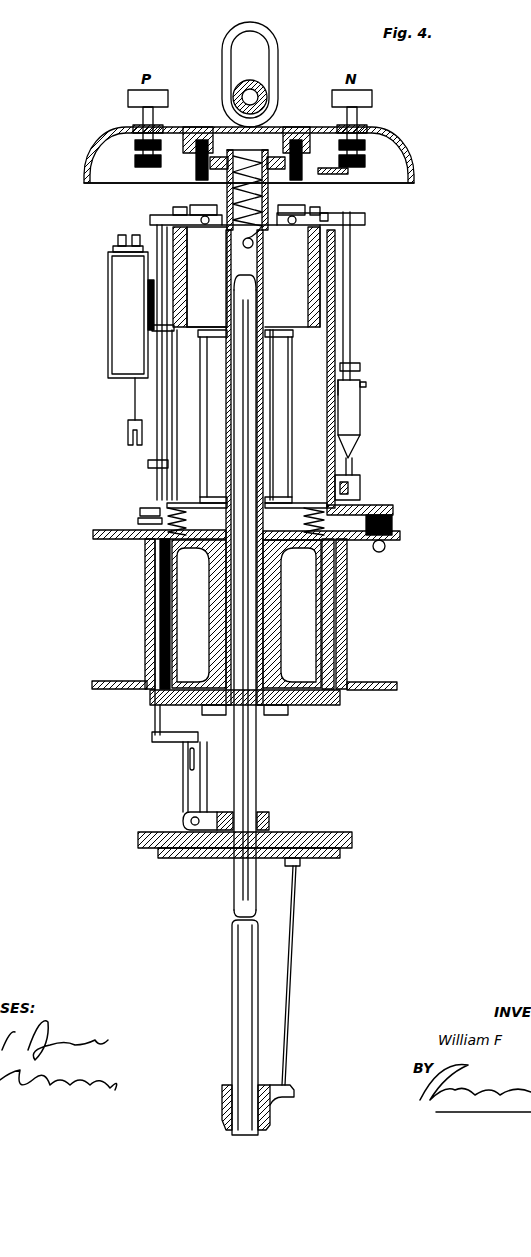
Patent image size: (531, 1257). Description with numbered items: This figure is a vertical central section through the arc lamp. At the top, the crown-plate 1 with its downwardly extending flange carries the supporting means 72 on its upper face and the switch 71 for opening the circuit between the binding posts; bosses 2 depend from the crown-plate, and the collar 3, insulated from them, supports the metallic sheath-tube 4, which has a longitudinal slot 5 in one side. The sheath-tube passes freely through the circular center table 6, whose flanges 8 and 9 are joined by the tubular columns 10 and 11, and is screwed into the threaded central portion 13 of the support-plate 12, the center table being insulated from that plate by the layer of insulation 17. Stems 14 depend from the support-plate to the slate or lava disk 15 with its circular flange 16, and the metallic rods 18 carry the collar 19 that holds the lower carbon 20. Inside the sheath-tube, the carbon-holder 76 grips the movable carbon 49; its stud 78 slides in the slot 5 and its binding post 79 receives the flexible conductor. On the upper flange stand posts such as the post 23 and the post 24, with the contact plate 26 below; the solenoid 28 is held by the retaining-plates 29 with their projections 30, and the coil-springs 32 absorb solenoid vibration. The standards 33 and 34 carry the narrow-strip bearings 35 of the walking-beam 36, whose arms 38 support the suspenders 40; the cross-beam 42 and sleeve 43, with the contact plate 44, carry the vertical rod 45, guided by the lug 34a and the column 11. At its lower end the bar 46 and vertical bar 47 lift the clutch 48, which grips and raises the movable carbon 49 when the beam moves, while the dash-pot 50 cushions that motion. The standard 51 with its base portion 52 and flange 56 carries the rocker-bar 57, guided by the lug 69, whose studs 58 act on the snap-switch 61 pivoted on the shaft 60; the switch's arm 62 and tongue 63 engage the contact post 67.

The crown-plate 1 is at (395, 148).
The bosses 2 is at (196, 142).
The collar 3 is at (230, 185).
The sheath-tube 4 is at (207, 415).
The longitudinal slot 5 is at (332, 350).
The center table 6 is at (280, 628).
The flange 8 is at (120, 540).
The flange 9 is at (103, 681).
The tubular column 10 is at (348, 630).
The tubular column 11 is at (145, 606).
The support-plate 12 is at (300, 705).
The enlarged central portion 13 is at (285, 714).
The stems 14 is at (183, 778).
The disk 15 is at (333, 832).
The circular flange 16 is at (170, 858).
The layer of insulation 17 is at (190, 688).
The metallic rods 18 is at (290, 965).
The collar 19 is at (266, 1112).
The lower carbon 20 is at (235, 1022).
The post 23 is at (172, 450).
The post 24 is at (336, 440).
The contact plate 26 is at (150, 522).
The solenoid 28 is at (296, 417).
The retaining-plates 29 is at (300, 330).
The transversely extending projections 30 is at (170, 326).
The coil-springs 32 is at (186, 521).
The standard 33 is at (308, 284).
The standard 34 is at (187, 288).
The horizontally projecting lug 34a is at (148, 303).
The narrow-strip bearings 35 is at (160, 215).
The walking-beam 36 is at (300, 200).
The arms 38 is at (165, 224).
The suspenders 40 is at (160, 228).
The cross-beam 42 is at (150, 462).
The sleeve 43 is at (158, 482).
The contact plate 44 is at (150, 510).
The vertical rod 45 is at (157, 400).
The bar 46 is at (175, 742).
The vertical bar 47 is at (200, 790).
The clutch 48 is at (220, 812).
The movable carbon 49 is at (264, 305).
The dash-pot 50 is at (108, 360).
The standard 51 is at (336, 266).
The base portion 52 is at (387, 507).
The flange 56 is at (360, 218).
The rocker-bar 57 is at (352, 263).
The studs 58 is at (362, 368).
The shaft 60 is at (368, 385).
The snap-switch 61 is at (349, 419).
The arm 62 is at (370, 355).
The tongue 63 is at (360, 468).
The contact post 67 is at (365, 490).
The horizontal lug 69 is at (335, 323).
The switch 71 is at (350, 172).
The supporting means 72 is at (272, 74).
The carbon-holder 76 is at (230, 258).
The stud 78 is at (262, 246).
The binding post 79 is at (252, 249).